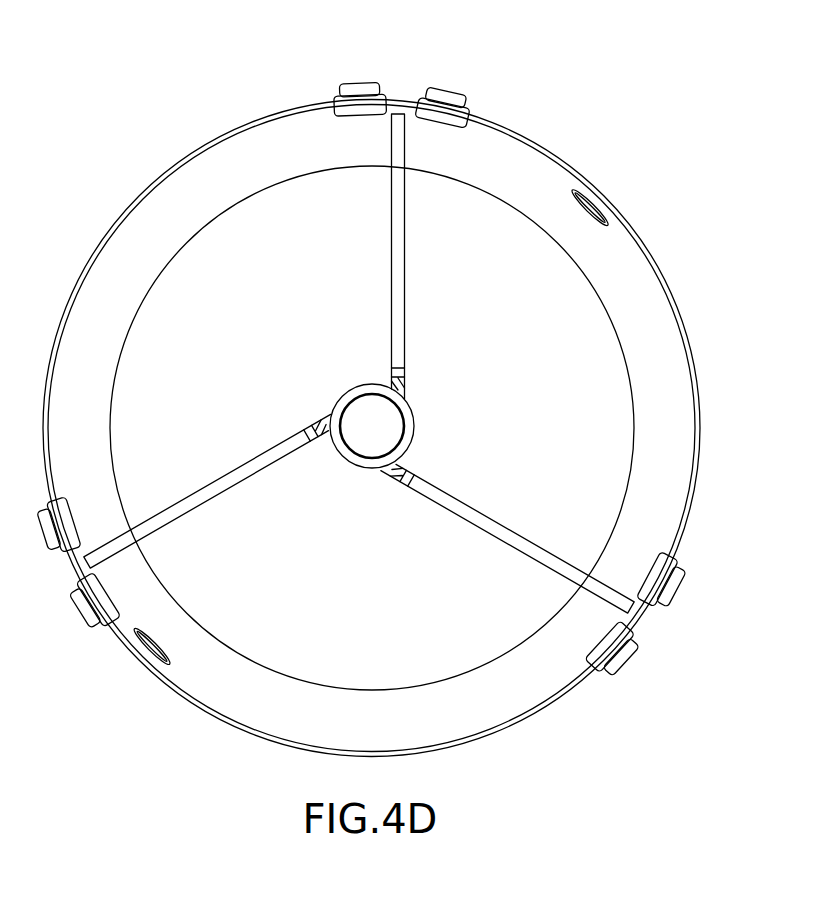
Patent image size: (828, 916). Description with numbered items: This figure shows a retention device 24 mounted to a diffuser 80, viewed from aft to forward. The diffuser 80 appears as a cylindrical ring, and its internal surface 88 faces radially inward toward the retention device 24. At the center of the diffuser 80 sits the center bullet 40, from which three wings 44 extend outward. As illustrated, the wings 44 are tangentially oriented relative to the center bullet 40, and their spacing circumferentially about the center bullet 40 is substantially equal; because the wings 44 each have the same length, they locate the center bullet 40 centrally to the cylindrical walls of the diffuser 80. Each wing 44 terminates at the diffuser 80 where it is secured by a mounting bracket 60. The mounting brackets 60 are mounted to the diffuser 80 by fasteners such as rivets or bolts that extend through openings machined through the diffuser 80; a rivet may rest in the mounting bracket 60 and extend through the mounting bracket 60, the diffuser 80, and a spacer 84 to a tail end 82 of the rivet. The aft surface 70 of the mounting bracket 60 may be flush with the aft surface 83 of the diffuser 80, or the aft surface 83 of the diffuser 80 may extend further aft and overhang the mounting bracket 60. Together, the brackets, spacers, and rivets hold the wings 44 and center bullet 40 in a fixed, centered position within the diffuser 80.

The retention device 24 is at (405, 375).
The center bullet 40 is at (415, 414).
The wings 44 is at (218, 477).
The mounting bracket 60 is at (434, 221).
The aft surface 70 is at (357, 108).
The diffuser 80 is at (530, 139).
The tail end 82 is at (350, 84).
The aft surface 83 is at (484, 120).
The spacer 84 is at (336, 97).
The internal surface 88 is at (683, 338).